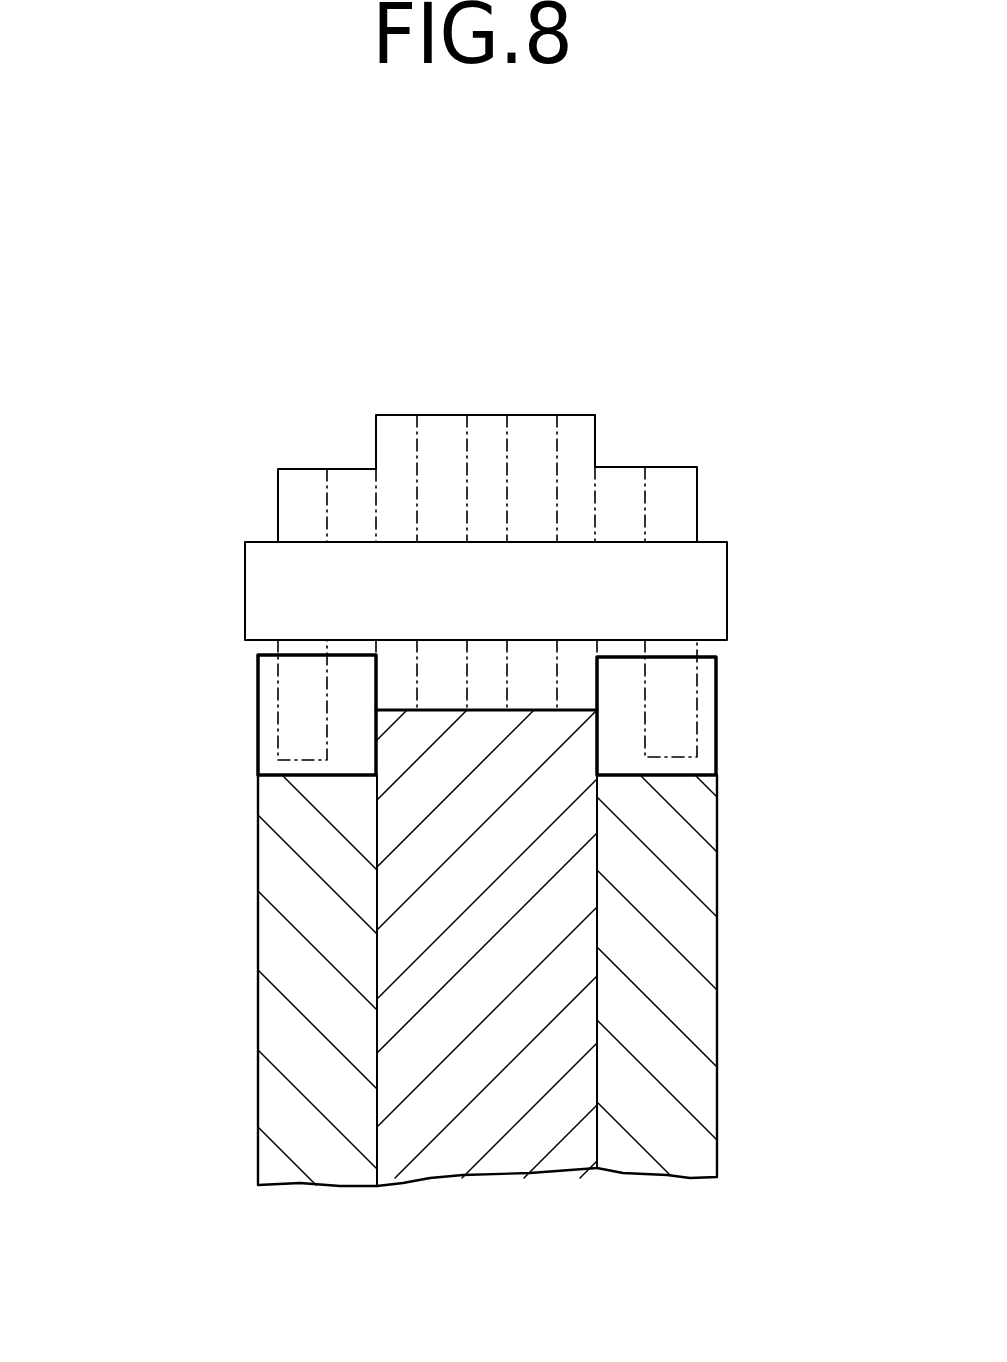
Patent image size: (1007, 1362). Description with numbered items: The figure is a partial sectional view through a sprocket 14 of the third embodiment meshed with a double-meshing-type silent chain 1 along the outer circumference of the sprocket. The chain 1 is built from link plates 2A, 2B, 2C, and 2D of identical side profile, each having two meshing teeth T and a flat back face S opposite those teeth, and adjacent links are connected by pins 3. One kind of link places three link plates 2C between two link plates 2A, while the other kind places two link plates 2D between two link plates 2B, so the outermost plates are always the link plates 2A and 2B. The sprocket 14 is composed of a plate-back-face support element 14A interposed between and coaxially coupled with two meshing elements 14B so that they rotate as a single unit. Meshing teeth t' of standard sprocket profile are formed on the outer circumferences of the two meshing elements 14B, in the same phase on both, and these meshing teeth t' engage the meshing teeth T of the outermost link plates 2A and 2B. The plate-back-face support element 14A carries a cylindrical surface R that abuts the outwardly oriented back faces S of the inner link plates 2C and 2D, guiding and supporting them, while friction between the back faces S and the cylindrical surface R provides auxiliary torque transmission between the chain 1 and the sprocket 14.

The double-meshing-type silent chain 1 is at (511, 504).
The link plate 2A is at (305, 466).
The link plate 2B is at (352, 467).
The link plate 2C is at (390, 414).
The link plate 2D is at (438, 414).
The pin 3 is at (715, 572).
The sprocket 14 is at (488, 947).
The plate-back-face support element 14A is at (515, 1150).
The meshing element 14B is at (287, 1103).
The meshing teeth t' is at (478, 636).
The back face S is at (437, 712).
The meshing teeth T is at (337, 742).
The cylindrical surface R is at (543, 710).